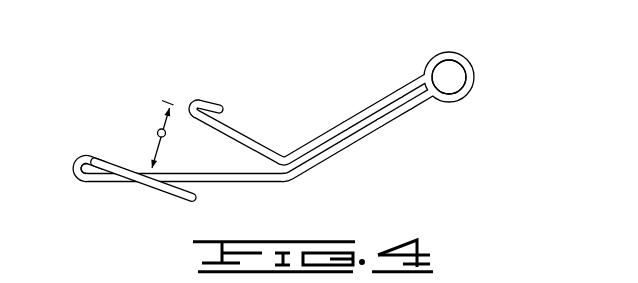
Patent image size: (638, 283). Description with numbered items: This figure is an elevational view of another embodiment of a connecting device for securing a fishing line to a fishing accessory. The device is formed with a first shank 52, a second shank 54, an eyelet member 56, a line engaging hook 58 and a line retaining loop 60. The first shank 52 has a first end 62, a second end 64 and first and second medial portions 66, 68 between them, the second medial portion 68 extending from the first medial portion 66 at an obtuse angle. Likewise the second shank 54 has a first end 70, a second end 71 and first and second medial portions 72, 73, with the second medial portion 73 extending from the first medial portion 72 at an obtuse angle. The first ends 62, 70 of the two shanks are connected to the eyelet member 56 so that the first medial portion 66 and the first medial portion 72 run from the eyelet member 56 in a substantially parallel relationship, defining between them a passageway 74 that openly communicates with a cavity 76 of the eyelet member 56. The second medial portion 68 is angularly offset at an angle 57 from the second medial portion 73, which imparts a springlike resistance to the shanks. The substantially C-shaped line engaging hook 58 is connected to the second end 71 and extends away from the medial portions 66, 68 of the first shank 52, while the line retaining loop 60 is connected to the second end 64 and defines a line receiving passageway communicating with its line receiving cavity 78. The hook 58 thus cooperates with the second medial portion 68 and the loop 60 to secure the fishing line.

The first shank 52 is at (331, 167).
The second shank 54 is at (365, 98).
The eyelet member 56 is at (463, 42).
The angle 57 is at (158, 131).
The line engaging hook 58 is at (200, 85).
The line retaining loop 60 is at (71, 187).
The first end 62 is at (393, 121).
The second end 64 is at (115, 164).
The first medial portion 66 is at (366, 139).
The second medial portion 68 is at (247, 183).
The first end 70 is at (422, 72).
The second end 71 is at (191, 98).
The first medial portion 72 is at (330, 130).
The second medial portion 73 is at (230, 127).
The passageway 74 is at (418, 103).
The cavity 76 is at (454, 72).
The line receiving cavity 78 is at (86, 168).